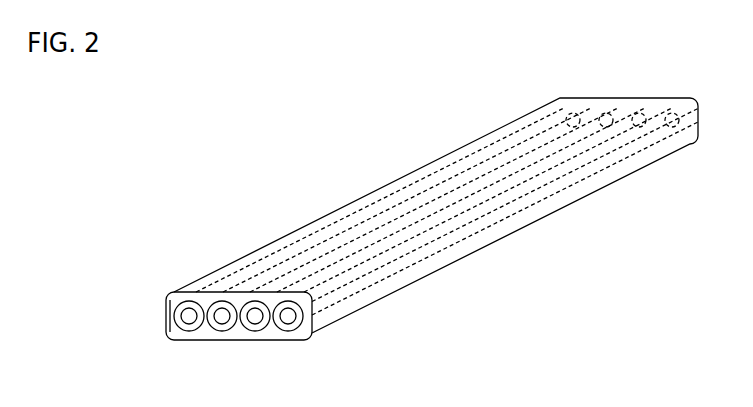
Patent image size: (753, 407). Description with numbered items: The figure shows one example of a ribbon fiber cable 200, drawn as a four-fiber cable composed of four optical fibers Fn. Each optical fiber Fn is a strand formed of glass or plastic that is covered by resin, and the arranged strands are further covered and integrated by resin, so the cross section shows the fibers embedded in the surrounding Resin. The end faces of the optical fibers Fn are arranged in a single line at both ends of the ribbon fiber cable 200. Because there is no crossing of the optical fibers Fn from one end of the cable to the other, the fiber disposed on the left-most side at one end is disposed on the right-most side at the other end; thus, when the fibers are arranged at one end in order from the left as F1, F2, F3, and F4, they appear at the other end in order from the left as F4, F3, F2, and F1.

The ribbon fiber cable 200 is at (362, 199).
The optical fiber Fn is at (348, 285).
The first optical fiber F1 is at (381, 223).
The second optical fiber F2 is at (414, 223).
The third optical fiber F3 is at (447, 223).
The fourth optical fiber F4 is at (481, 223).
The resin Resin is at (178, 311).